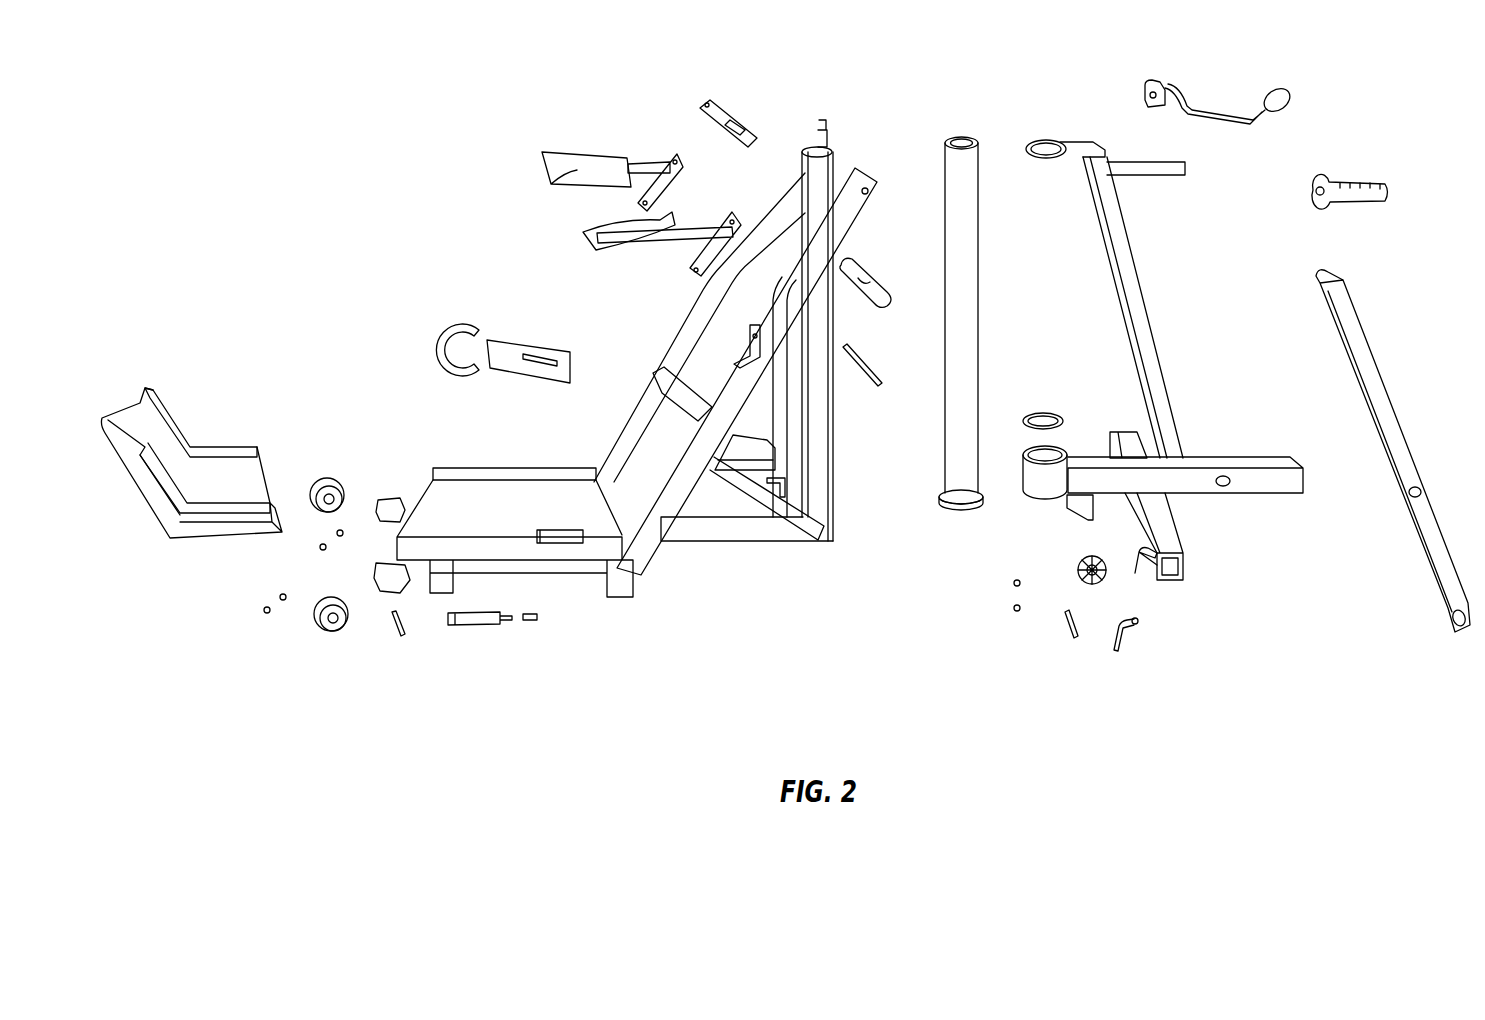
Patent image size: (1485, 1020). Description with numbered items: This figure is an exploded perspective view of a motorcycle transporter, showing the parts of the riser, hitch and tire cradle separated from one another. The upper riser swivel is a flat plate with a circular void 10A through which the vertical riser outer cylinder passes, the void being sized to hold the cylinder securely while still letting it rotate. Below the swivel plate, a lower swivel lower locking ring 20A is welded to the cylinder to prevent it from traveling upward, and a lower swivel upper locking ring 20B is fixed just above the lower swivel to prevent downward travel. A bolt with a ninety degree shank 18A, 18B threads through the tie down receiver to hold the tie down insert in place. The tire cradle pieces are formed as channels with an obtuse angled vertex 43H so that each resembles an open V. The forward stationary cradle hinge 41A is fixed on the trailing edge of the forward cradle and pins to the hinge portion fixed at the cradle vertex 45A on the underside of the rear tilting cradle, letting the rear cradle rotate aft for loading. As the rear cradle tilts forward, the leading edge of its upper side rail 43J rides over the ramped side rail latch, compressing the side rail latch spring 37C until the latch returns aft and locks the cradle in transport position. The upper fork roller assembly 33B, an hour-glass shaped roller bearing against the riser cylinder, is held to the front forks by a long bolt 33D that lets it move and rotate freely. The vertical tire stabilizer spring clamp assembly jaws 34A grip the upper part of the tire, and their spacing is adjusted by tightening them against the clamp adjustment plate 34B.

The circular void 10A is at (1043, 140).
The bolt with a ninety degree shank 18A is at (1107, 638).
The bolt with a ninety degree shank 18B is at (1143, 573).
The lower swivel lower locking ring 20A is at (960, 513).
The lower swivel upper locking ring 20B is at (1043, 412).
The upper fork roller assembly 33B is at (883, 300).
The long bolt 33D is at (867, 380).
The vertical tire stabilizer spring clamp assembly jaws 34A is at (583, 243).
The clamp adjustment plate 34B is at (703, 102).
The side rail latch spring 37C is at (530, 623).
The forward stationary cradle hinge 41A is at (397, 547).
The obtuse angled vertex 43H is at (232, 447).
The upper side rail 43J is at (268, 503).
The cradle vertex 45A is at (167, 537).